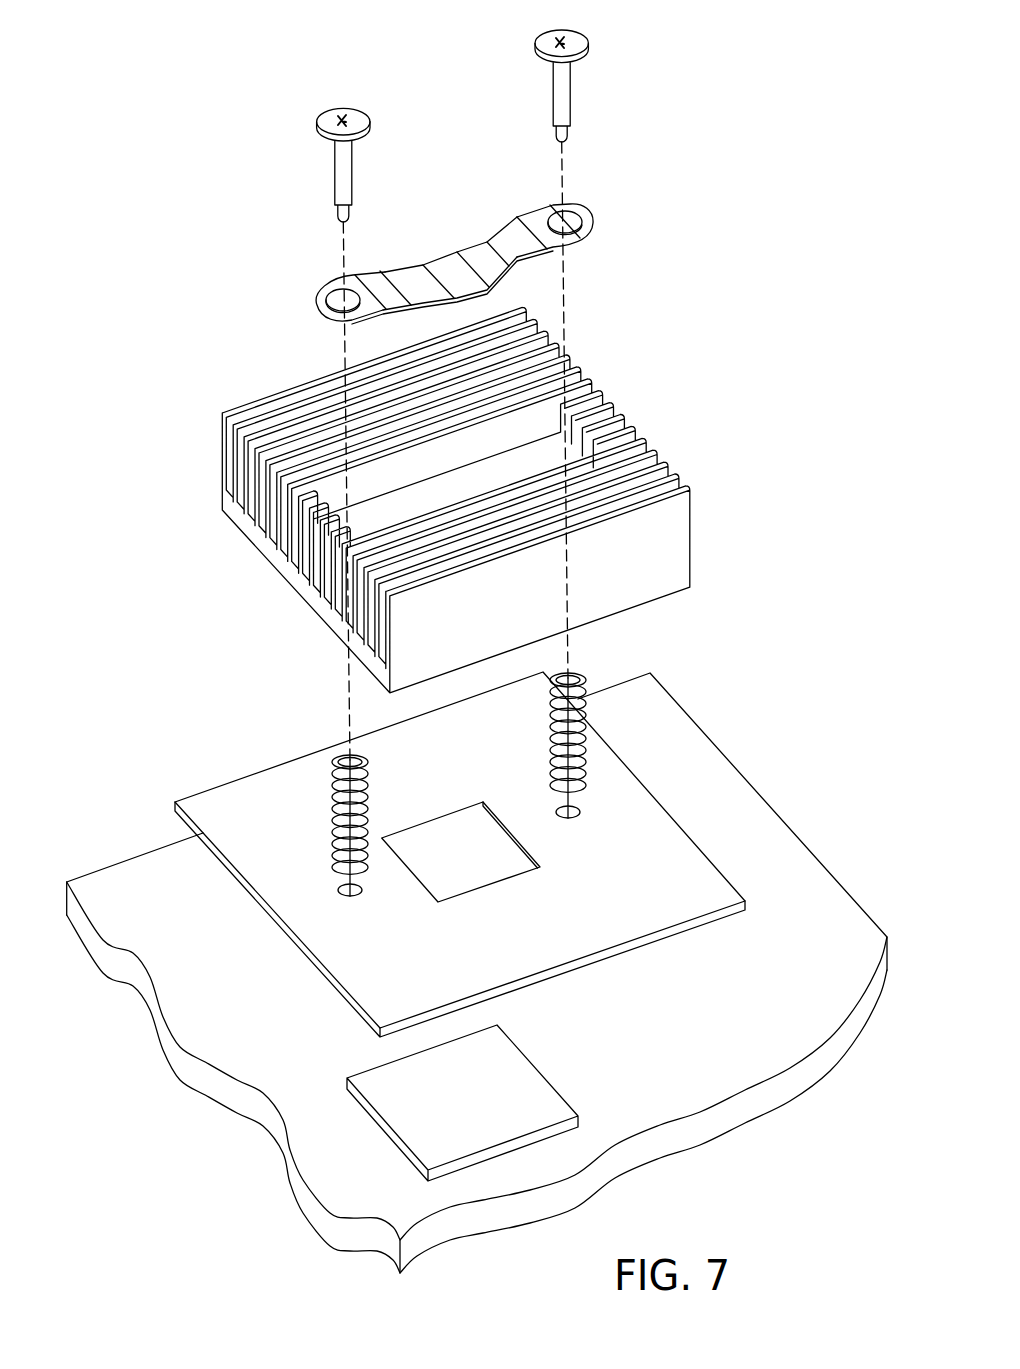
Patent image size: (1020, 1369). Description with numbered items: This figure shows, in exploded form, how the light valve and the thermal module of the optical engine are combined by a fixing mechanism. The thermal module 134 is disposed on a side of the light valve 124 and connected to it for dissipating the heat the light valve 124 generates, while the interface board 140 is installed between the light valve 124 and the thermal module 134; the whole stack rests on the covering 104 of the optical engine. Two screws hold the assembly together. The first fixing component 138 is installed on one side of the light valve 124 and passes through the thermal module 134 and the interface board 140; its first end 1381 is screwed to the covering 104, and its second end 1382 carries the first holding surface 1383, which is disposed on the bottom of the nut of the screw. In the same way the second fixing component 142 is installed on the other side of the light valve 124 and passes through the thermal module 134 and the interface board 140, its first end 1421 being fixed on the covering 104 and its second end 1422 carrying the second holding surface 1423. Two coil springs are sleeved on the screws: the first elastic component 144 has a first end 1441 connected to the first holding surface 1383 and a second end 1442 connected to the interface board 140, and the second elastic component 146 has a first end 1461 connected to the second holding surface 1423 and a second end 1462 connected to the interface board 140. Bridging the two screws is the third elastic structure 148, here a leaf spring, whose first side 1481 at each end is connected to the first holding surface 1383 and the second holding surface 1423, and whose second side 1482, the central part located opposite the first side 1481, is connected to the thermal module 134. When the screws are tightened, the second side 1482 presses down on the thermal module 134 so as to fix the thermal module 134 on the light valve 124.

The covering 104 is at (795, 872).
The light valve 124 is at (492, 1104).
The thermal module 134 is at (683, 536).
The first fixing component 138 is at (635, 349).
The first end 1381 is at (575, 136).
The second end 1382 is at (580, 40).
The first holding surface 1383 is at (577, 68).
The interface board 140 is at (673, 847).
The second fixing component 142 is at (271, 430).
The first end 1421 is at (313, 450).
The second end 1422 is at (324, 121).
The second holding surface 1423 is at (335, 141).
The first elastic component 144 is at (666, 716).
The first end 1441 is at (574, 672).
The second end 1442 is at (590, 772).
The second elastic component 146 is at (271, 770).
The first end 1461 is at (333, 757).
The second end 1462 is at (335, 862).
The third elastic structure 148 is at (454, 214).
The first side 1481 is at (353, 272).
The second side 1482 is at (549, 161).